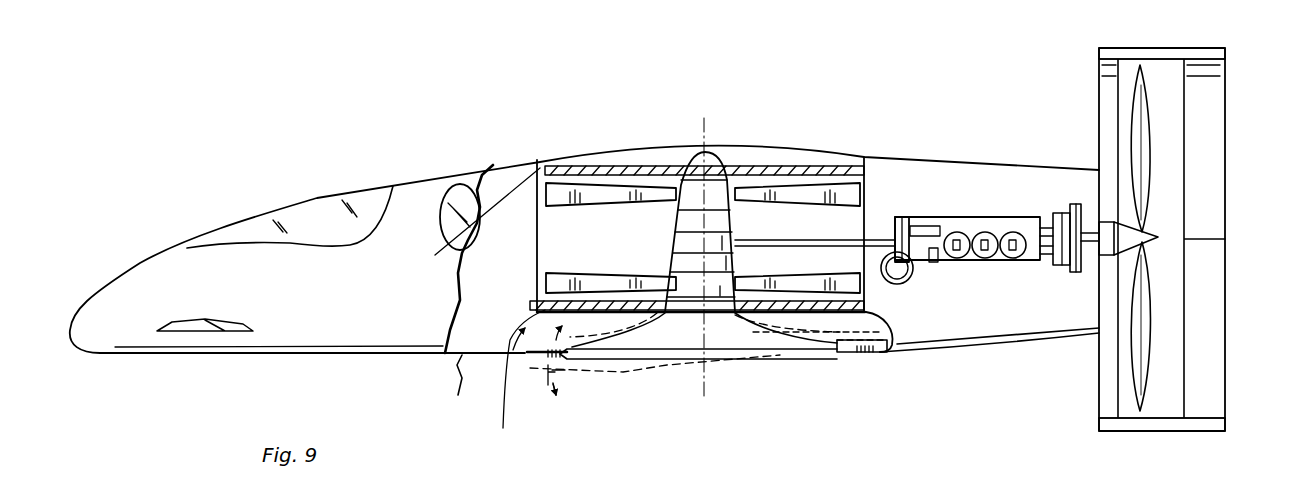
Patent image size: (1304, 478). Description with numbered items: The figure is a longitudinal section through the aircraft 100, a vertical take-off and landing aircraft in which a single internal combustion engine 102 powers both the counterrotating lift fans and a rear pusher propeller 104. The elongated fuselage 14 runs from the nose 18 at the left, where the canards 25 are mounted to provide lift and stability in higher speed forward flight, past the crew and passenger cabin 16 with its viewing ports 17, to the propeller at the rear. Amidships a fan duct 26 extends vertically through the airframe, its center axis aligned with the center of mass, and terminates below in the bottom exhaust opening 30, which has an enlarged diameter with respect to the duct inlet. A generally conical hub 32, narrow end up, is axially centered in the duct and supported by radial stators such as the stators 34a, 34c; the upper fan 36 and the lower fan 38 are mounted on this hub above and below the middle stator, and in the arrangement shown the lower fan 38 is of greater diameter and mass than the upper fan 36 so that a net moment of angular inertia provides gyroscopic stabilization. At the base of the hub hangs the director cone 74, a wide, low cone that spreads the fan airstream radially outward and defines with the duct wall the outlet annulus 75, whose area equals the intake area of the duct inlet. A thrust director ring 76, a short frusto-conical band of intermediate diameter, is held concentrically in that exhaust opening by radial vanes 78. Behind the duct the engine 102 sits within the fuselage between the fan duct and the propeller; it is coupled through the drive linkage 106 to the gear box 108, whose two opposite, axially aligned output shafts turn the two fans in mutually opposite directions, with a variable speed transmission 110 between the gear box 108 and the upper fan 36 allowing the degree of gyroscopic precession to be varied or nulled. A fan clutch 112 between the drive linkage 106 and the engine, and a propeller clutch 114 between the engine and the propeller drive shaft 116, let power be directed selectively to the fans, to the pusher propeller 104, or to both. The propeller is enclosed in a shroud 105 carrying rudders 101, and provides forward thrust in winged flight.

The fuselage 14 is at (293, 383).
The crew and passenger cabin 16 is at (333, 216).
The viewing ports 17 is at (458, 195).
The nose 18 is at (73, 345).
The canards 25 is at (211, 333).
The fan duct 26 is at (537, 222).
The bottom exhaust opening 30 is at (885, 352).
The conical hub 32 is at (715, 150).
The radial stator 34a is at (462, 220).
The radial stator 34c is at (535, 306).
The upper fan 36 is at (568, 192).
The lower fan 38 is at (545, 283).
The director cone 74 is at (627, 372).
The outlet annulus 75 is at (853, 370).
The thrust director ring 76 is at (878, 352).
The radial vanes 78 is at (847, 360).
The aircraft 100 is at (982, 203).
The rudders 101 is at (1224, 360).
The internal combustion engine 102 is at (977, 262).
The pusher propeller 104 is at (1151, 122).
The shroud 105 is at (1112, 48).
The drive linkage 106 is at (881, 240).
The gear box 108 is at (680, 242).
The variable speed transmission 110 is at (716, 226).
The fan clutch 112 is at (906, 217).
The propeller clutch 114 is at (1060, 213).
The propeller drive shaft 116 is at (1087, 256).